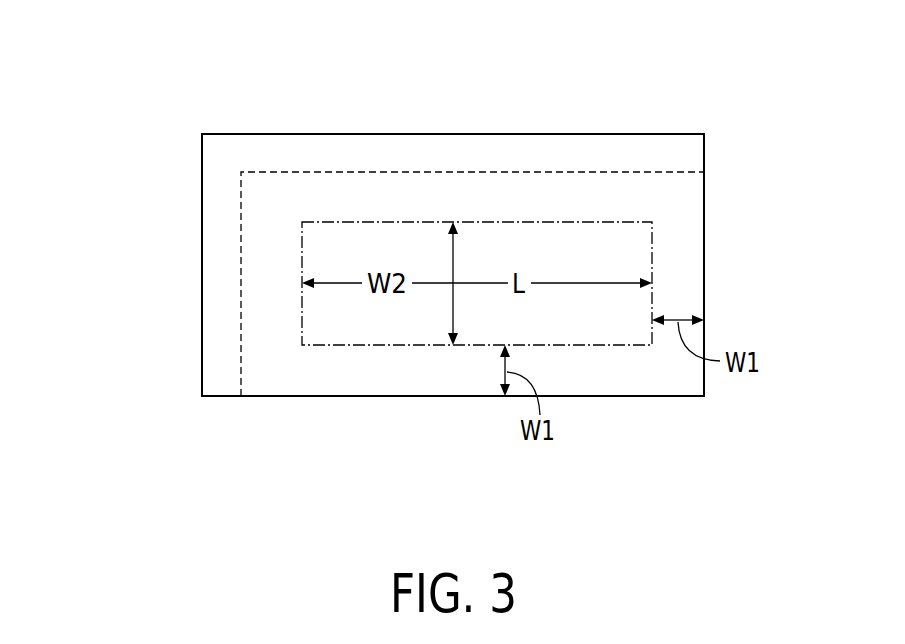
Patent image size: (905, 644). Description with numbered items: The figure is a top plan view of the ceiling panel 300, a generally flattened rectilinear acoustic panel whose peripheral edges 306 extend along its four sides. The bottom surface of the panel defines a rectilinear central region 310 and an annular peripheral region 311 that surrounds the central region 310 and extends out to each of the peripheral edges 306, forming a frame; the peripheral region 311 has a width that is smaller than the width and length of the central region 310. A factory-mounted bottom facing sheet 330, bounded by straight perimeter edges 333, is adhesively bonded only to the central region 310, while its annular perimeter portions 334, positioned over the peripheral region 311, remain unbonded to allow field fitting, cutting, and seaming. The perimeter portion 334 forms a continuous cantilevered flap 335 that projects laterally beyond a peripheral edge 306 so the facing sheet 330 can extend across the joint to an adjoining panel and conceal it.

The ceiling panel 300 is at (106, 97).
The peripheral edges 306 is at (240, 195).
The central region 310 is at (567, 313).
The peripheral region 311 is at (623, 205).
The bottom facing sheet 330 is at (580, 155).
The perimeter edges 333 is at (241, 122).
The perimeter portions 334 is at (340, 373).
The flap 335 is at (218, 277).